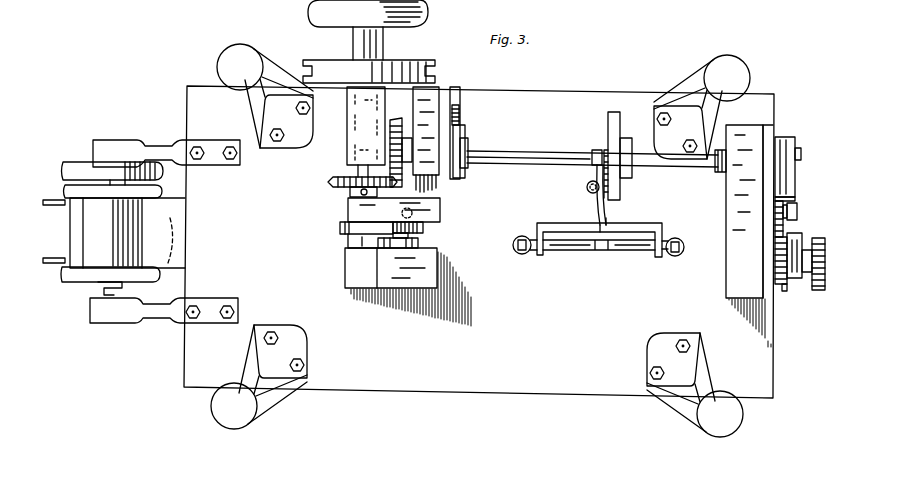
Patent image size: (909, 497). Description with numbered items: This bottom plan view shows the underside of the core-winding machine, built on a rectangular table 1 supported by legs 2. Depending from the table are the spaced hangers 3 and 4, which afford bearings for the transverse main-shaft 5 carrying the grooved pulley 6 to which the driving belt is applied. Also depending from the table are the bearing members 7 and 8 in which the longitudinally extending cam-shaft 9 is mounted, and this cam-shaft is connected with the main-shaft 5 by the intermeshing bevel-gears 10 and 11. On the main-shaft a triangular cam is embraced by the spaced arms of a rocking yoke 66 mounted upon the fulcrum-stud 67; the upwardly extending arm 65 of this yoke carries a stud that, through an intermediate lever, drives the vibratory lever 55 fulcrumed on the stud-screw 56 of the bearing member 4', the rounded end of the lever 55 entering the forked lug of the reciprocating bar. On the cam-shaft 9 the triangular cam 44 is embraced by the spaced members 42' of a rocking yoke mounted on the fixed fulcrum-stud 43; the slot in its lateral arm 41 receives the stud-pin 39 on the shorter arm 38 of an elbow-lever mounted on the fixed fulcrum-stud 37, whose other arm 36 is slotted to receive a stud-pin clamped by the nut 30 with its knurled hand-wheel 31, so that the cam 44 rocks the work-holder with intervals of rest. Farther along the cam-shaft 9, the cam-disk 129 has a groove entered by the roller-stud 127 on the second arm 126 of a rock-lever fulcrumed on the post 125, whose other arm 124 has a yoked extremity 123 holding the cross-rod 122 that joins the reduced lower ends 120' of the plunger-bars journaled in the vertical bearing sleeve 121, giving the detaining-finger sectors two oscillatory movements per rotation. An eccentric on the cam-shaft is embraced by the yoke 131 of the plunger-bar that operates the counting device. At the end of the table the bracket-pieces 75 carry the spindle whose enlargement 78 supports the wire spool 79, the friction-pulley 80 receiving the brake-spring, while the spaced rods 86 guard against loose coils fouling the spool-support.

The table 1 is at (534, 328).
The legs 2 is at (288, 86).
The hanger 3 is at (347, 140).
The hanger 4 is at (383, 210).
The bearing member 4' is at (408, 287).
The main-shaft 5 is at (357, 170).
The grooved pulley 6 is at (435, 71).
The bearing member 7 is at (425, 176).
The bearing member 8 is at (749, 236).
The cam-shaft 9 is at (520, 152).
The bevel-gear 10 is at (395, 119).
The bevel-gear 11 is at (328, 182).
The nut 30 is at (786, 284).
The knurled head or hand-wheel 31 is at (818, 291).
The arm of elbow-lever 36 is at (785, 292).
The fulcrum-stud 37 is at (800, 241).
The shorter arm 38 is at (797, 220).
The stud-pin 39 is at (797, 210).
The lateral arm 41 is at (775, 215).
The spaced members 42' is at (800, 192).
The fulcrum-stud 43 is at (801, 155).
The triangular cam 44 is at (786, 171).
The vibratory lever 55 is at (418, 247).
The stud-screw 56 is at (405, 242).
The upwardly extending arm 65 is at (414, 223).
The rocking yoke 66 is at (366, 227).
The fulcrum-stud 67 is at (408, 235).
The bracket-pieces 75 is at (165, 231).
The enlargement 78 is at (65, 190).
The spool 79 is at (114, 233).
The friction-pulley 80 is at (113, 173).
The spaced rods 86 is at (168, 236).
The lower ends of plunger-bars 120' is at (612, 247).
The vertical bearing sleeve 121 is at (520, 236).
The cross-rod 122 is at (568, 253).
The yoked extremity 123 is at (565, 226).
The arm of rock-lever 124 is at (605, 222).
The post 125 is at (588, 189).
The second arm 126 is at (597, 176).
The roller-stud 127 is at (598, 149).
The cam-disk 129 is at (615, 114).
The yoke 131 is at (459, 110).